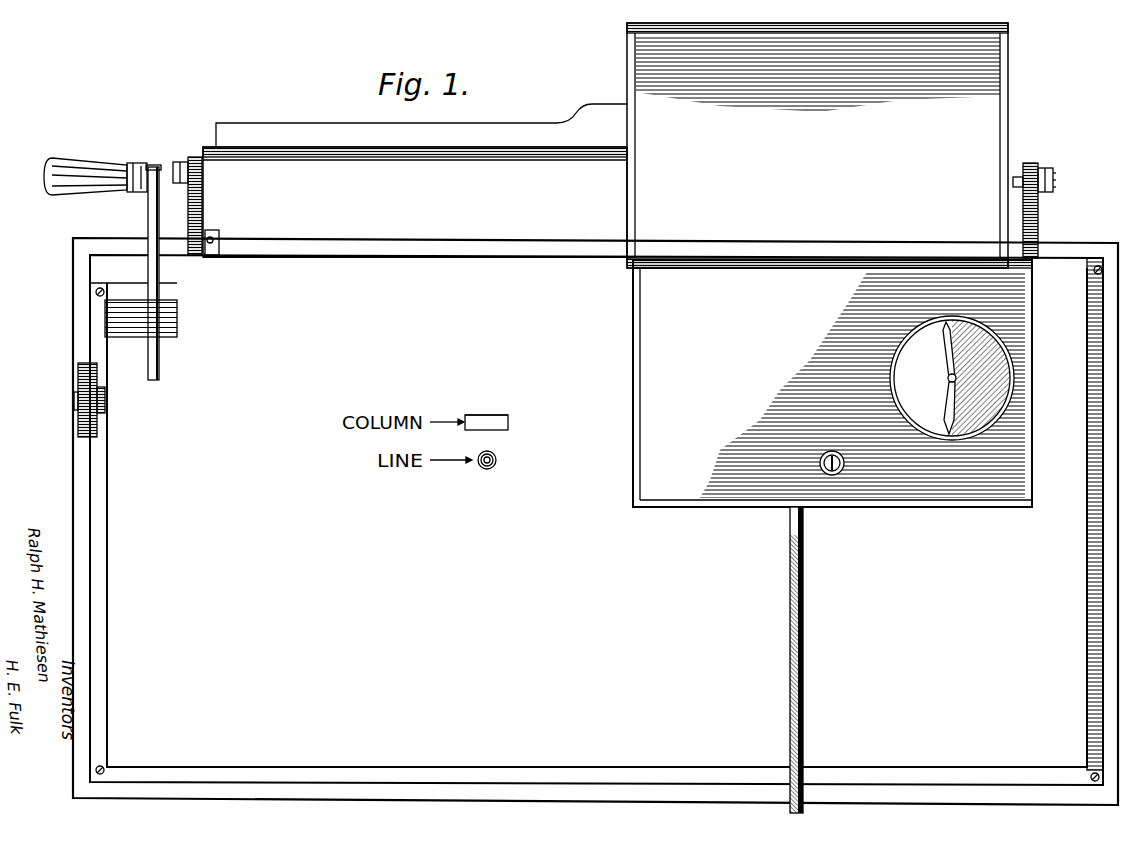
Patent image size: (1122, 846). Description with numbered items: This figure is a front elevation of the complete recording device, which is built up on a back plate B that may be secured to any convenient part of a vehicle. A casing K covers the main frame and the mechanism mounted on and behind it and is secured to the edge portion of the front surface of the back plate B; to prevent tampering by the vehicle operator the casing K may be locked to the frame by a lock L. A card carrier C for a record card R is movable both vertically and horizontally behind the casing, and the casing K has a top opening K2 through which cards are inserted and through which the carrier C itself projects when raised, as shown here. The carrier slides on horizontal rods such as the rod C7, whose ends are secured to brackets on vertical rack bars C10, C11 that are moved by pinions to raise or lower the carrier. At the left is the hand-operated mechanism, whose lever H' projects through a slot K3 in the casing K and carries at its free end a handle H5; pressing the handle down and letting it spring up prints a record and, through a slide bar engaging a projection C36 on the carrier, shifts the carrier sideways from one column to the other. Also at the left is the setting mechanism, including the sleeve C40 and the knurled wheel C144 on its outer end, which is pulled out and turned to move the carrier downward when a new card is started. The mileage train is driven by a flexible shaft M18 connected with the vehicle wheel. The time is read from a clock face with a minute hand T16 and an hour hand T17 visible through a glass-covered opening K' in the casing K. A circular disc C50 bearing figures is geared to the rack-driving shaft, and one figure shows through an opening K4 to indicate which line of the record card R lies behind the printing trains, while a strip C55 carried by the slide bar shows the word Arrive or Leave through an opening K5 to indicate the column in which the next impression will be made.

The back plate B is at (75, 270).
The casing K is at (597, 517).
The card carrier C is at (415, 202).
The top opening K2 is at (422, 254).
The record card R is at (302, 107).
The rack bar C11 is at (1028, 207).
The horizontal rod C7 is at (1018, 178).
The rack bar C10 is at (202, 209).
The projection C36 is at (219, 241).
The lever H' is at (130, 272).
The handle H5 is at (100, 175).
The slot K3 is at (164, 356).
The gear C144 is at (78, 384).
The sleeve C40 is at (104, 397).
The glass-covered opening K' is at (846, 383).
The hour hand T17 is at (948, 360).
The minute hand T16 is at (954, 398).
The lock L is at (838, 476).
The flexible shaft M18 is at (803, 607).
The opening K5 is at (506, 413).
The strip C55 is at (485, 413).
The opening K4 is at (497, 460).
The circular disc C50 is at (482, 468).